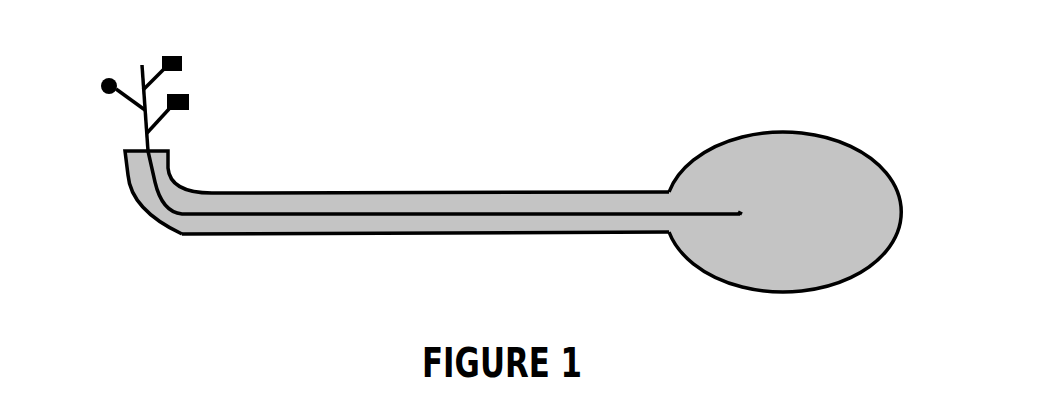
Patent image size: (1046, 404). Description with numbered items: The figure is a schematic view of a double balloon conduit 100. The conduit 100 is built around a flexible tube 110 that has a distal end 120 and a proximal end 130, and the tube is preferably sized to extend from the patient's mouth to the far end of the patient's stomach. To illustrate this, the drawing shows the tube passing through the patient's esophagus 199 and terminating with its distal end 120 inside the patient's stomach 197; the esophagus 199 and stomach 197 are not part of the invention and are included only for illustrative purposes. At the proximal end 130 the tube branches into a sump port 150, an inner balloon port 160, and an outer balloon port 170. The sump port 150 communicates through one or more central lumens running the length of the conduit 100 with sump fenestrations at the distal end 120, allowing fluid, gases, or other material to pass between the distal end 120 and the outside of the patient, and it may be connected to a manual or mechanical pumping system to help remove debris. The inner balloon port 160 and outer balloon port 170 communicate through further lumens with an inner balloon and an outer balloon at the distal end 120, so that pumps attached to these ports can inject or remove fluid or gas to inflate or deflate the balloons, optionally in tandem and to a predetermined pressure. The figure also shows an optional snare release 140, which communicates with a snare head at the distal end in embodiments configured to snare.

The double balloon conduit 100 is at (468, 115).
The flexible tube 110 is at (460, 215).
The distal end 120 is at (750, 198).
The proximal end 130 is at (186, 150).
The snare release 140 is at (102, 91).
The sump port 150 is at (142, 65).
The inner balloon port 160 is at (182, 56).
The outer balloon port 170 is at (189, 102).
The stomach 197 is at (853, 278).
The esophagus 199 is at (327, 235).